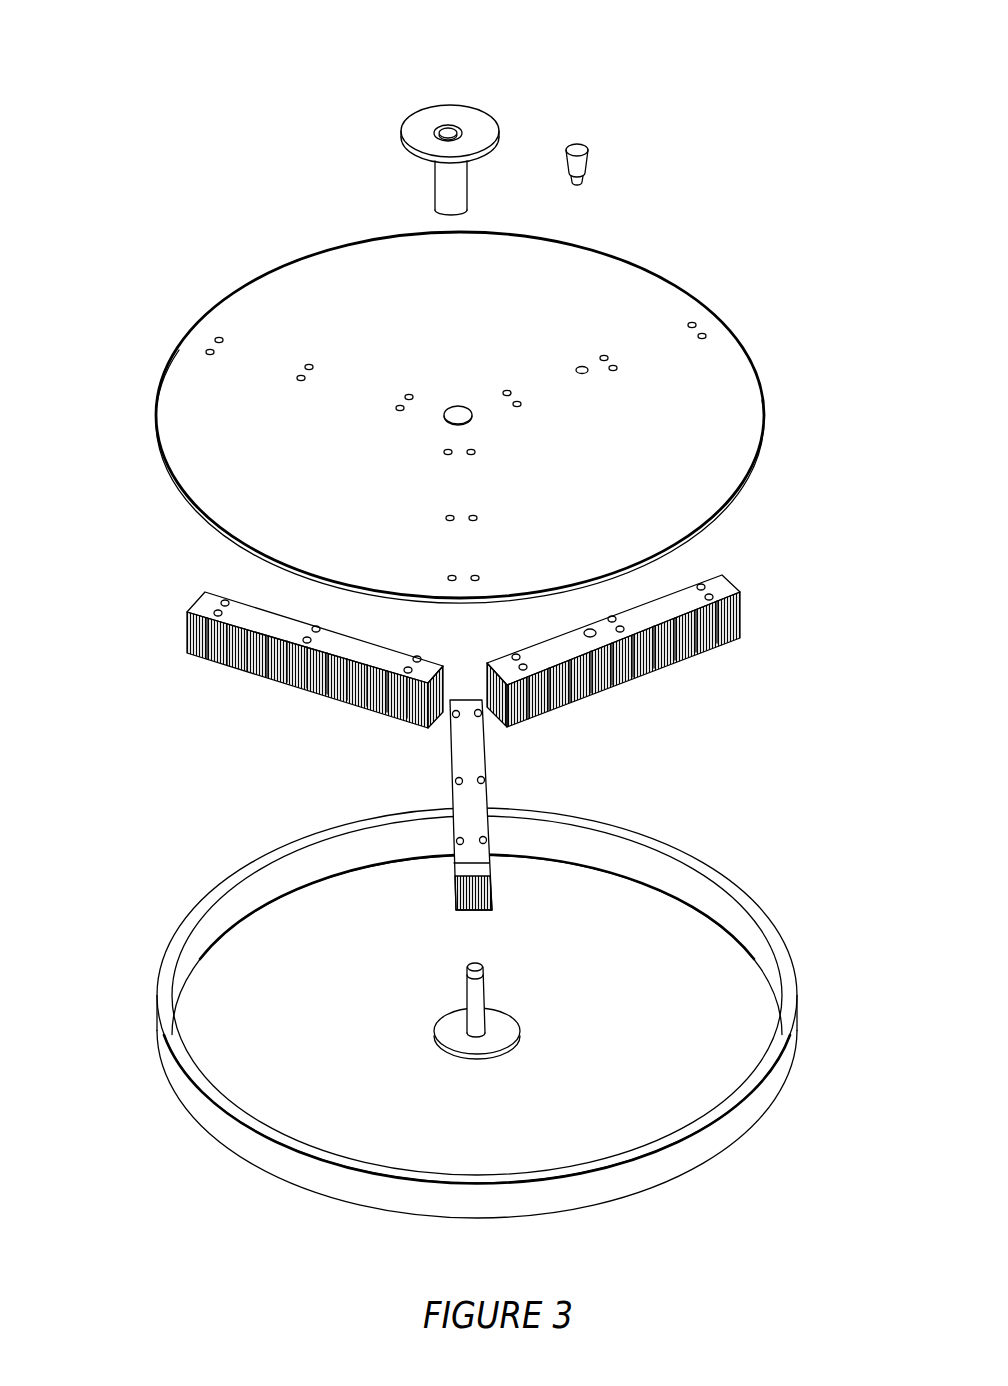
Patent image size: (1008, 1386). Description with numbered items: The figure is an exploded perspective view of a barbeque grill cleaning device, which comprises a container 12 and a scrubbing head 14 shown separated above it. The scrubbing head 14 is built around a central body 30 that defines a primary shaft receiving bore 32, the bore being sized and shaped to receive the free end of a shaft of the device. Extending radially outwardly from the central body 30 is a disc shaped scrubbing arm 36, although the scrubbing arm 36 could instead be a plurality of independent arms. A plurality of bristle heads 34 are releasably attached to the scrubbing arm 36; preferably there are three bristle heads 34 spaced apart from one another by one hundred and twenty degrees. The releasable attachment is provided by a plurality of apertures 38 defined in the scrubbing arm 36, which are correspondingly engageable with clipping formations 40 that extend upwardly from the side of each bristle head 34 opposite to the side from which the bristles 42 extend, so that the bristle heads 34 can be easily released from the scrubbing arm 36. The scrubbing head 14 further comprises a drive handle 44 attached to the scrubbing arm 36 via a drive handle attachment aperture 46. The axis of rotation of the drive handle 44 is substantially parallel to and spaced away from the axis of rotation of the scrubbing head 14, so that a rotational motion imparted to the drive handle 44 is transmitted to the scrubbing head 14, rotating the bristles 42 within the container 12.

The container 12 is at (677, 1150).
The scrubbing head 14 is at (668, 230).
The central body 30 is at (378, 108).
The primary shaft receiving bore 32 is at (448, 125).
The bristle heads 34 is at (720, 586).
The scrubbing arm 36 is at (733, 364).
The apertures 38 is at (696, 322).
The clipping formations 40 is at (252, 605).
The bristles 42 is at (225, 652).
The drive handle 44 is at (580, 143).
The drive handle attachment aperture 46 is at (583, 374).